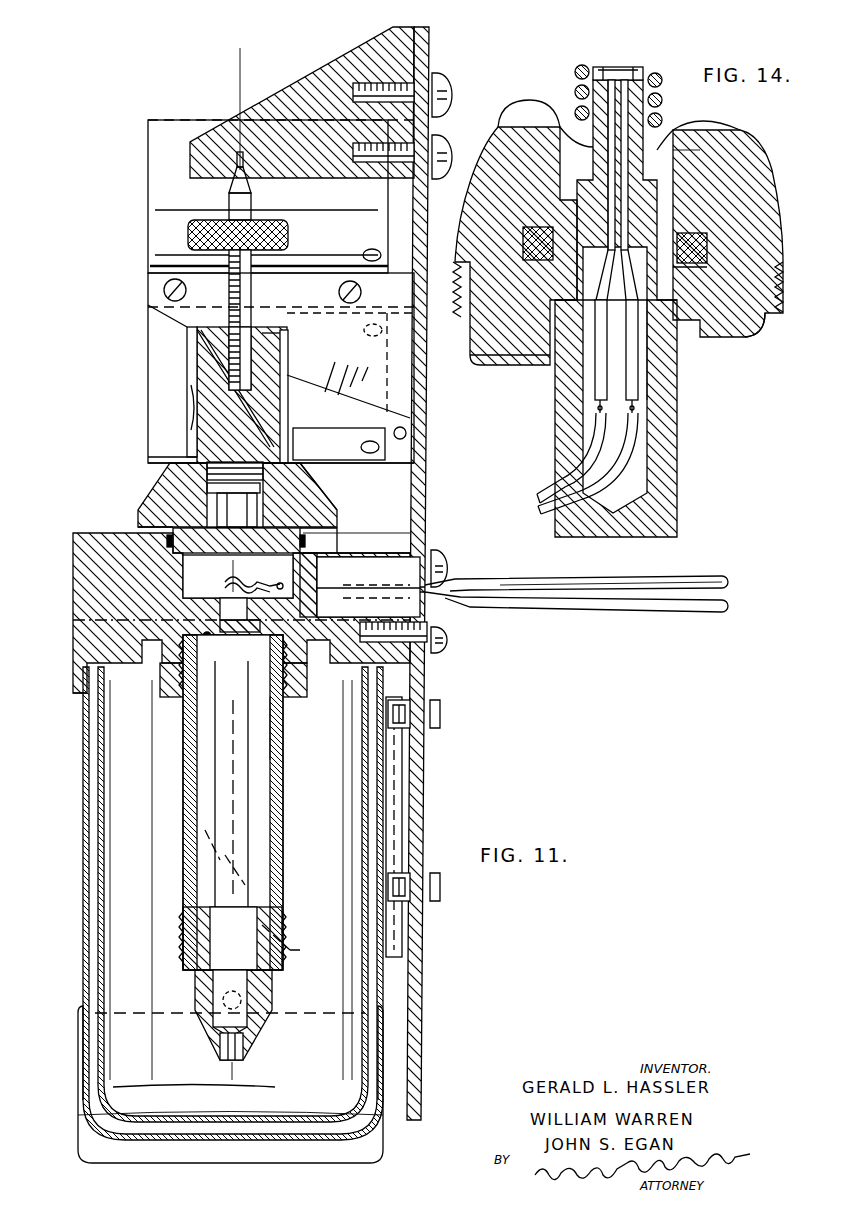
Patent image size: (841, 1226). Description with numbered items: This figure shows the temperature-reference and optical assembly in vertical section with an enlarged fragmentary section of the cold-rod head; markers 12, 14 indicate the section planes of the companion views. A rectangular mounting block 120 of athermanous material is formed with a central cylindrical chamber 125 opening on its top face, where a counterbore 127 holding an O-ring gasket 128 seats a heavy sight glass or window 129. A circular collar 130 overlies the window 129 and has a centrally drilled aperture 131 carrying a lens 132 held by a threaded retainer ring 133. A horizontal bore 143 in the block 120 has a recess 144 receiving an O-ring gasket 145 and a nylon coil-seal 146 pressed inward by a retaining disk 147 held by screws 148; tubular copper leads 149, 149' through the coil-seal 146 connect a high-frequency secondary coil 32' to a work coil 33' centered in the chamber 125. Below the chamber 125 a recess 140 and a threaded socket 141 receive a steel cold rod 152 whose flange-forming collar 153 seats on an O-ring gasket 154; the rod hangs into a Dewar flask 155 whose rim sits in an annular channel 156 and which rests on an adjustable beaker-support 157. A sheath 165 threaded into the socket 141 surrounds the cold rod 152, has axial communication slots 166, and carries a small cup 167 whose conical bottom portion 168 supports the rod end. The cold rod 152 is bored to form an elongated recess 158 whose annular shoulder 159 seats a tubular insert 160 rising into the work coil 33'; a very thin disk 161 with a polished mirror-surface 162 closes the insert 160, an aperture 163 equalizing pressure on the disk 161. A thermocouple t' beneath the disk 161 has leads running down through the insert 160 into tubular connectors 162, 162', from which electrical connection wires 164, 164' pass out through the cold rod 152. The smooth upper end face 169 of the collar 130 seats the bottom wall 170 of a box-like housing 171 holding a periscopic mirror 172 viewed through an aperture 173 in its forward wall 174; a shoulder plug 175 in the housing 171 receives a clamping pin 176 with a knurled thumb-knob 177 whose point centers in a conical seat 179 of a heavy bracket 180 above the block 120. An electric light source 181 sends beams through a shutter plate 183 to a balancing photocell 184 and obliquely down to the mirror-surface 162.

In FIG. 11, the electronic component 12 is at (230, 63).
In FIG. 11, the electronic component 14 is at (226, 563).
In FIG. 11, the high-frequency secondary coil 32' is at (617, 567).
In FIG. 11, the work coil 33' is at (255, 576).
In FIG. 11, the mounting block 120 is at (73, 645).
In FIG. 14, the mounting block 120 is at (733, 148).
In FIG. 11, the central cylindrical chamber 125 is at (180, 572).
In FIG. 11, the counterbore 127 is at (167, 545).
In FIG. 11, the O-ring gasket 128 is at (340, 546).
In FIG. 11, the sight glass or window 129 is at (307, 533).
In FIG. 11, the circular collar 130 is at (160, 490).
In FIG. 11, the centrally drilled aperture 131 is at (307, 478).
In FIG. 11, the lens 132 is at (140, 522).
In FIG. 11, the threaded retainer ring 133 is at (178, 458).
In FIG. 14, the recess 140 is at (672, 157).
In FIG. 11, the internally threaded socket 141 is at (285, 714).
In FIG. 14, the internally threaded socket 141 is at (458, 343).
In FIG. 11, the horizontal bore 143 is at (330, 565).
In FIG. 11, the recess 144 is at (302, 690).
In FIG. 11, the O-ring gasket 145 is at (380, 556).
In FIG. 11, the coil-seal 146 is at (425, 552).
In FIG. 11, the retaining disk 147 is at (424, 552).
In FIG. 11, the screws 148 is at (446, 566).
In FIG. 11, the tubular copper lead 149 is at (574, 605).
In FIG. 11, the tubular copper lead 149' is at (576, 570).
In FIG. 11, the cold rod 152 is at (245, 773).
In FIG. 14, the cold rod 152 is at (670, 503).
In FIG. 14, the flange-forming collar 153 is at (683, 323).
In FIG. 11, the O-ring gasket 154 is at (188, 640).
In FIG. 14, the O-ring gasket 154 is at (693, 320).
In FIG. 11, the Dewar flask 155 is at (83, 955).
In FIG. 11, the annular channel 156 is at (80, 692).
In FIG. 11, the beaker-support 157 is at (380, 1160).
In FIG. 14, the elongated recess 158 is at (683, 347).
In FIG. 14, the annular shoulder 159 is at (697, 378).
In FIG. 14, the tubular insert 160 is at (557, 313).
In FIG. 14, the thin disk 161 is at (612, 66).
In FIG. 14, the polished mirror-surface 162 is at (591, 225).
In FIG. 14, the tubular connector 162' is at (684, 362).
In FIG. 14, the aperture 163 is at (593, 80).
In FIG. 14, the electrical connection wire 164 is at (561, 458).
In FIG. 14, the electrical connection wire 164' is at (580, 475).
In FIG. 11, the sheath 165 is at (280, 812).
In FIG. 14, the sheath 165 is at (487, 365).
In FIG. 11, the axial communication slots 166 is at (262, 910).
In FIG. 11, the small cup 167 is at (262, 1035).
In FIG. 11, the conical bottom portion 168 is at (215, 1047).
In FIG. 11, the upper horizontal end face 169 is at (207, 470).
In FIG. 11, the bottom wall 170 is at (295, 446).
In FIG. 11, the box-like housing 171 is at (282, 358).
In FIG. 11, the periscopic mirror 172 is at (235, 388).
In FIG. 11, the aperture 173 is at (188, 410).
In FIG. 11, the forwardly presented wall 174 is at (187, 360).
In FIG. 11, the shoulder plug 175 is at (275, 333).
In FIG. 11, the clamping pin 176 is at (229, 290).
In FIG. 11, the knurled thumb-knob 177 is at (292, 232).
In FIG. 11, the conical seat 179 is at (246, 177).
In FIG. 11, the heavy bracket 180 is at (303, 86).
In FIG. 11, the electric light source 181 is at (148, 334).
In FIG. 11, the shutter plate 183 is at (150, 272).
In FIG. 11, the balancing photocell 184 is at (148, 199).
In FIG. 14, the thermocouple t' is at (649, 165).